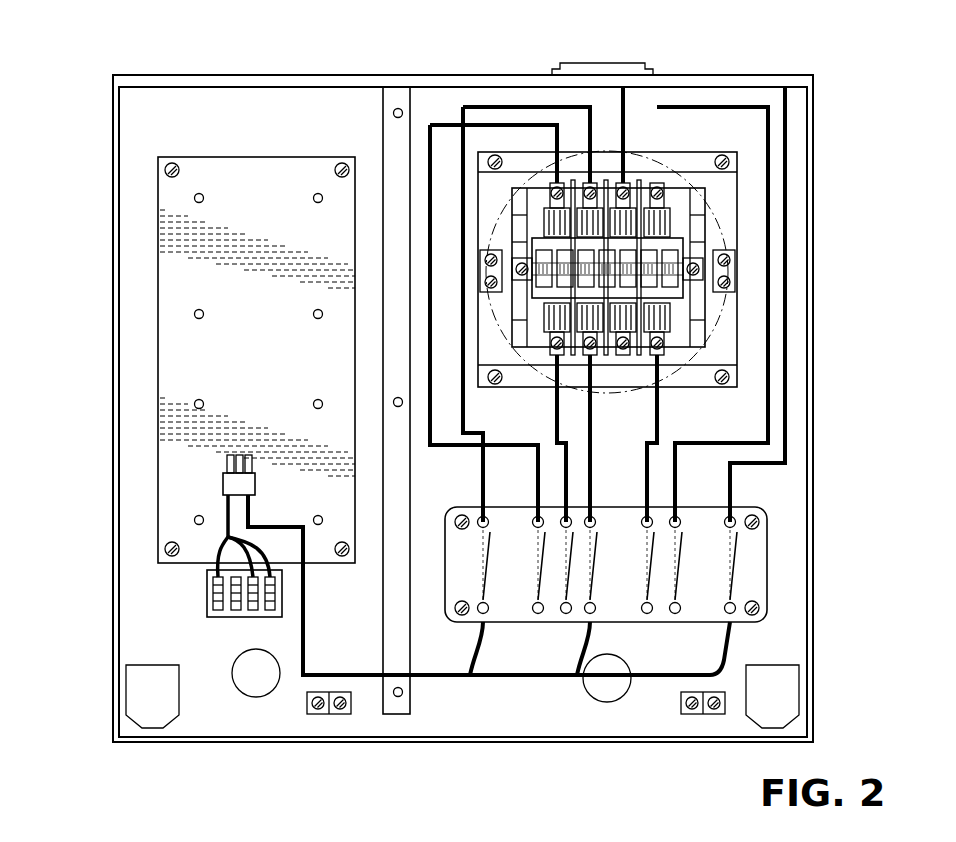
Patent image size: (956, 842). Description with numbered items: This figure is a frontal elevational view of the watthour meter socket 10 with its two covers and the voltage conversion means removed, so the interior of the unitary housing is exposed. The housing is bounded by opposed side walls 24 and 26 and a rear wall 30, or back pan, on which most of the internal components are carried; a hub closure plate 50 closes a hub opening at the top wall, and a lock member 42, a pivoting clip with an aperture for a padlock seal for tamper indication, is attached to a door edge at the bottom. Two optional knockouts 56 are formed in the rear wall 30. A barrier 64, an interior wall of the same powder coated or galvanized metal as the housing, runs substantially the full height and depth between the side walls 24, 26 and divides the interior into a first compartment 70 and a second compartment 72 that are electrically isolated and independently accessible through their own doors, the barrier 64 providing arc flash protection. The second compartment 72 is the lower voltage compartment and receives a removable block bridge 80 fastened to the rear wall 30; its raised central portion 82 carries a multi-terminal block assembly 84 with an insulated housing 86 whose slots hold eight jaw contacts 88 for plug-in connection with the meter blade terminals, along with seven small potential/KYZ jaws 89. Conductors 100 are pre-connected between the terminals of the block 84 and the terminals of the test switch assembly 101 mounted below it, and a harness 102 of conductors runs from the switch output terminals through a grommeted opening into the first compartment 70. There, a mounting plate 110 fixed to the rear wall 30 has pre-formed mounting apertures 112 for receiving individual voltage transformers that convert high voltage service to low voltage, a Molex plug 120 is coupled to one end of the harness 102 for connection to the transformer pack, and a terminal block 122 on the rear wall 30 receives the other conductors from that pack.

The watthour meter socket 10 is at (100, 127).
The side wall 24 is at (114, 397).
The side wall 26 is at (811, 250).
The rear wall 30 is at (288, 100).
The lock member 42 is at (463, 767).
The hub closure plate 50 is at (580, 63).
The knockouts 56 is at (280, 678).
The barrier 64 is at (390, 313).
The first compartment 70 is at (152, 228).
The second compartment 72 is at (795, 123).
The block bridge 80 is at (675, 157).
The raised central portion 82 is at (728, 193).
The multi-terminal block assembly 84 is at (637, 157).
The insulated housing 86 is at (573, 160).
The jaw contacts 88 is at (697, 233).
The potential/KYZ jaws 89 is at (535, 255).
The conductors 100 is at (770, 388).
The test switch assembly 101 is at (767, 567).
The harness 102 is at (478, 677).
The mounting plate 110 is at (158, 248).
The mounting apertures 112 is at (194, 315).
The Molex plug 120 is at (223, 482).
The terminal block 122 is at (208, 606).